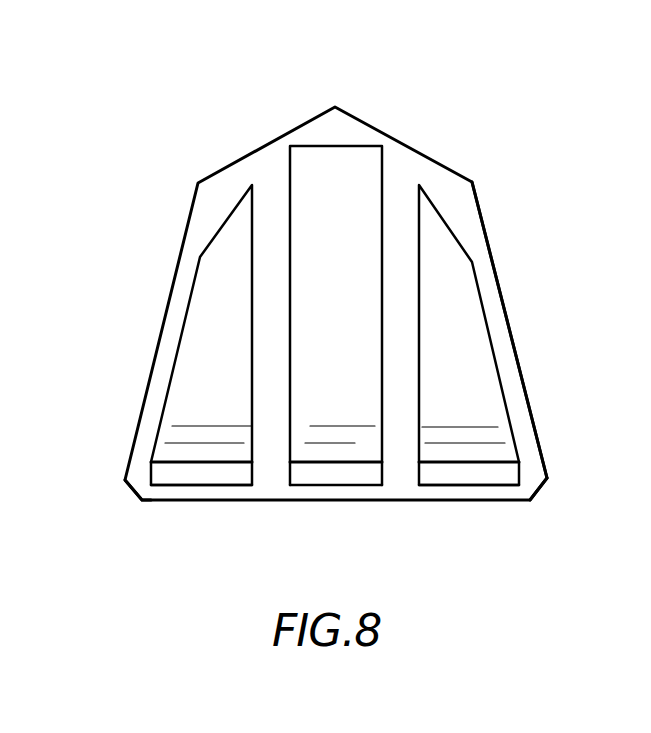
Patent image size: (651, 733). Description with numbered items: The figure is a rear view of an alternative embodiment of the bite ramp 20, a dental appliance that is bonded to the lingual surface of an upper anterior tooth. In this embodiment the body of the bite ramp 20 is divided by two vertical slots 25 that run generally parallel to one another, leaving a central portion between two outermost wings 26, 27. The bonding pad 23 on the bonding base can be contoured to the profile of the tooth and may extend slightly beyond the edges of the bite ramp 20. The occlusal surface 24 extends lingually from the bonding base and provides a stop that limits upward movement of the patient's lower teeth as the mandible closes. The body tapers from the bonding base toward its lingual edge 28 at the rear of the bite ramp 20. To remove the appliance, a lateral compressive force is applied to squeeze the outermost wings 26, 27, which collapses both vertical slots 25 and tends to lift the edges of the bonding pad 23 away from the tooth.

The bite ramp 20 is at (227, 98).
The bonding pad 23 is at (452, 193).
The occlusal surface 24 is at (243, 485).
The vertical slots 25 is at (270, 202).
The outermost wing 26 is at (223, 393).
The outermost wing 27 is at (476, 388).
The lingual edge 28 is at (167, 468).